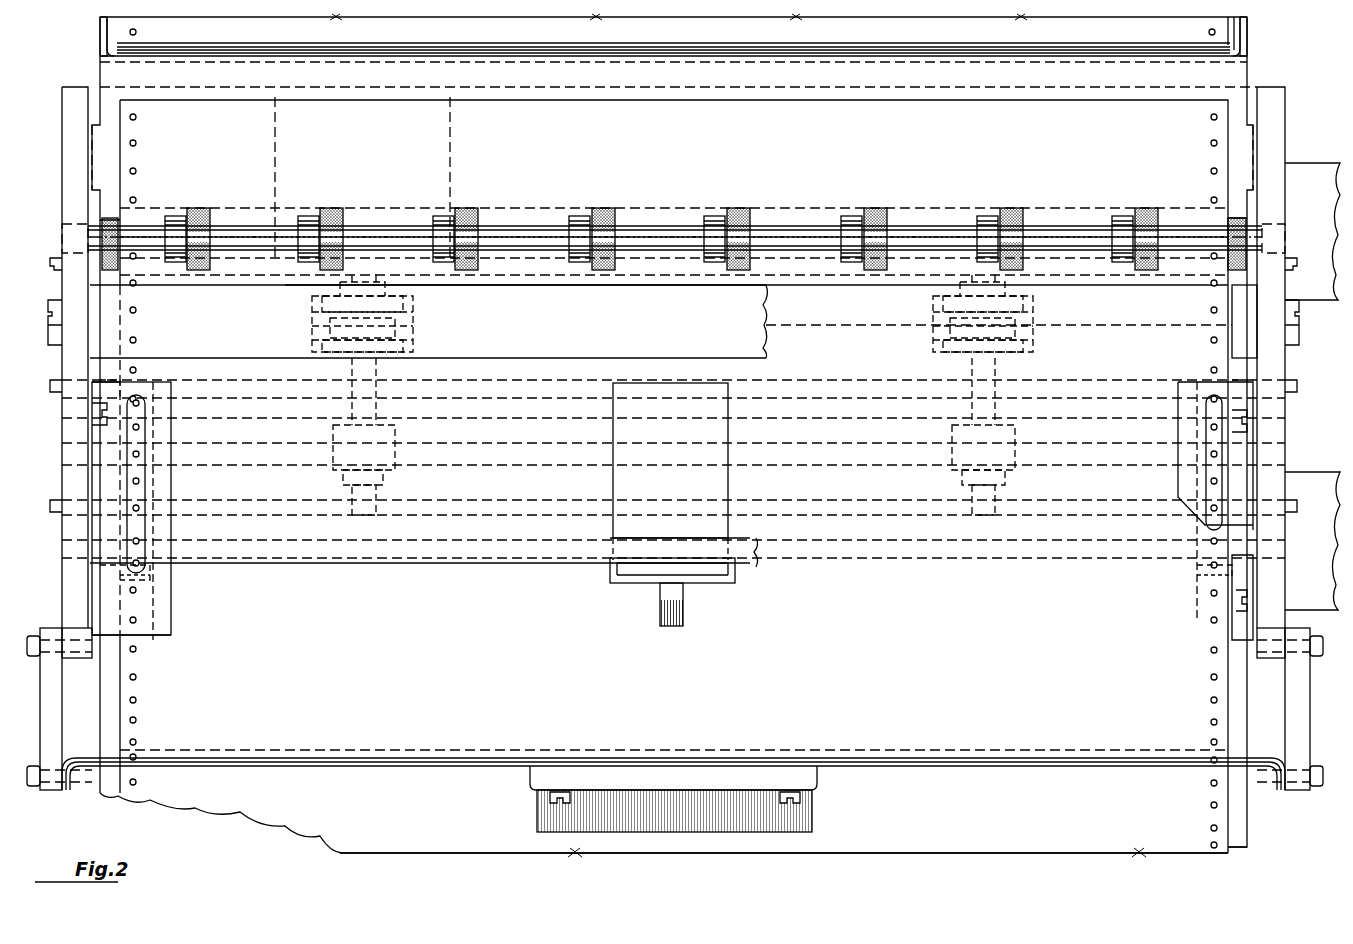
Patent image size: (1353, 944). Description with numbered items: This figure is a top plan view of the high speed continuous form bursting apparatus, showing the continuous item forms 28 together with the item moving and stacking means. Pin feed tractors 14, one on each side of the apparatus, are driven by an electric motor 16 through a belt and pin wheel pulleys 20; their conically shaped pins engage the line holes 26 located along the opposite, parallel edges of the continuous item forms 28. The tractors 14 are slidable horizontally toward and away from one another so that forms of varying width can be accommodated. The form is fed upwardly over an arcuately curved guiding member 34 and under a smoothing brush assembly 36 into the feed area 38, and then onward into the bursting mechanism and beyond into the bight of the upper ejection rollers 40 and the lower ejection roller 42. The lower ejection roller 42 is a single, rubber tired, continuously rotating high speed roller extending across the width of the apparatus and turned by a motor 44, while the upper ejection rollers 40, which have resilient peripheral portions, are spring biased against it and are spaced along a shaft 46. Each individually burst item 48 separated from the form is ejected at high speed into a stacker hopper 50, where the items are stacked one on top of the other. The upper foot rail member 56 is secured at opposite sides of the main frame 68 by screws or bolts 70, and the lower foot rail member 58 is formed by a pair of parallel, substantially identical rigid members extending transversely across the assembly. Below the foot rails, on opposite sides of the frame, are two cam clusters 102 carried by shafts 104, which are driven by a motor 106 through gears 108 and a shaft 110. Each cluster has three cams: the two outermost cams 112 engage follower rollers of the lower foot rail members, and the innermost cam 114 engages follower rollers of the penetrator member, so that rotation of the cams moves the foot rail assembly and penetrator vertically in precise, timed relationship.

The pin feed tractor mechanism 14 is at (144, 592).
The electric motor 16 is at (1312, 482).
The pin wheel pulleys 20 is at (158, 390).
The line holes 26 is at (140, 678).
The continuous item forms 28 is at (787, 684).
The arcuately curved guiding member 34 is at (1247, 838).
The smoothing brush assembly 36 is at (812, 815).
The feed area 38 is at (176, 487).
The upper ejection rollers 40 is at (331, 208).
The lower ejection roller 42 is at (790, 208).
The motor 44 is at (1303, 174).
The shaft 46 is at (650, 227).
The individually burst item 48 is at (1232, 25).
The stacker hopper 50 is at (100, 27).
The upper foot rail member 56 is at (770, 342).
The lower foot rail member 58 is at (50, 303).
The main frame 68 is at (62, 130).
The screws or bolts 70 is at (48, 336).
The cam clusters 102 is at (310, 314).
The shafts 104 is at (380, 370).
The motor 106 is at (452, 157).
The gears 108 is at (397, 441).
The shaft 110 is at (569, 466).
The outermost cams 112 is at (414, 304).
The innermost cam 114 is at (420, 322).